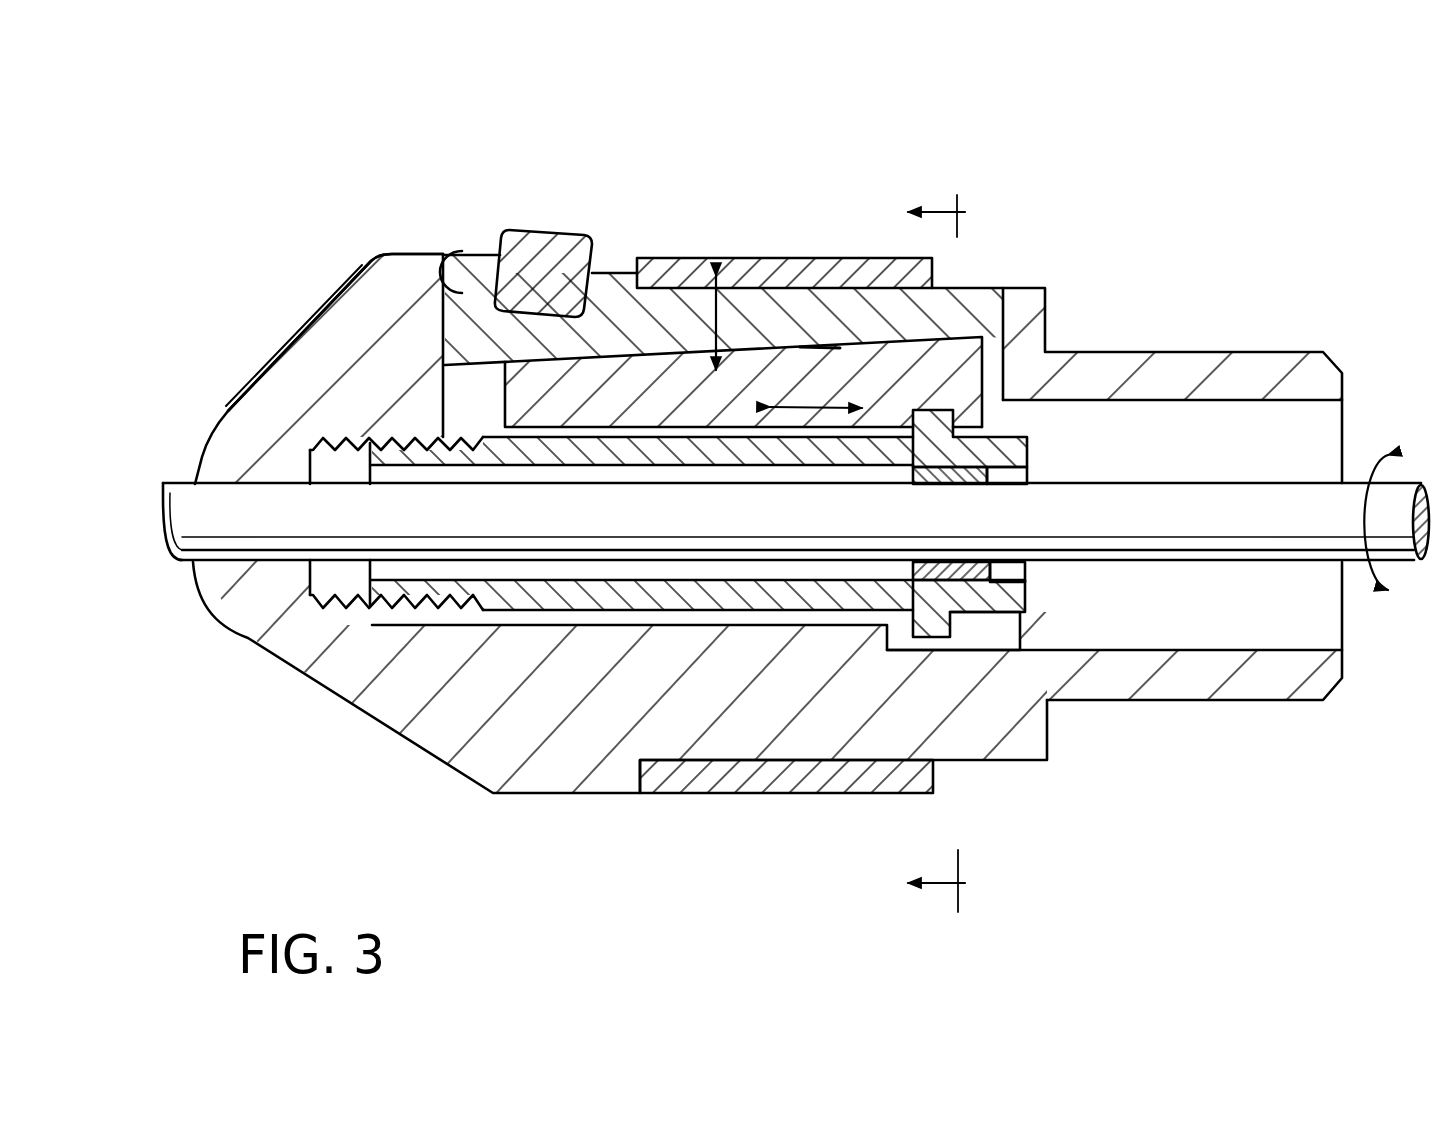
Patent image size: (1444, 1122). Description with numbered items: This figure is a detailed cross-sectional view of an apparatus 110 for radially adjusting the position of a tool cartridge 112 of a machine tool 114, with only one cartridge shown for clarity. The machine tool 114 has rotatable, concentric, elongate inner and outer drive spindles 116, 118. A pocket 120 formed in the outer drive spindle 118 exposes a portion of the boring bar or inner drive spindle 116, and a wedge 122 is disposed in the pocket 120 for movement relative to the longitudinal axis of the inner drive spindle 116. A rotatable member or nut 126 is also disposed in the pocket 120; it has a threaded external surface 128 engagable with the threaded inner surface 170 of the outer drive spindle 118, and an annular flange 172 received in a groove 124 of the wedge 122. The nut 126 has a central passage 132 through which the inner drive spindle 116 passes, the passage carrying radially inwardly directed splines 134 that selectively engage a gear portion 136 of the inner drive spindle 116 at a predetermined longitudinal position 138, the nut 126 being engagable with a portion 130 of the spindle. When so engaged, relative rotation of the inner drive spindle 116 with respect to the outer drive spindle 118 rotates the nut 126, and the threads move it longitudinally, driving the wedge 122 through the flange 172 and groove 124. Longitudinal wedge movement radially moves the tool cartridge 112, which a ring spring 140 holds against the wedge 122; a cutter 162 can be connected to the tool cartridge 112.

The apparatus 110 is at (648, 184).
The tool cartridge 112 is at (480, 258).
The machine tool 114 is at (381, 183).
The inner drive spindle 116 is at (198, 502).
The outer drive spindle 118 is at (478, 752).
The pocket 120 is at (457, 256).
The wedge 122 is at (935, 348).
The groove 124 is at (940, 412).
The rotatable member or nut 126 is at (567, 602).
The threaded external surface 128 is at (412, 607).
The portion of the inner drive spindle 130 is at (1005, 476).
The central passage 132 is at (568, 584).
The splines 134 is at (965, 478).
The gear portions 136 is at (940, 628).
The predetermined longitudinal positions 138 is at (1008, 570).
The ring spring 140 is at (783, 782).
The cutter 162 is at (526, 231).
The threaded inner surface 170 is at (347, 607).
The annular flange 172 is at (968, 568).